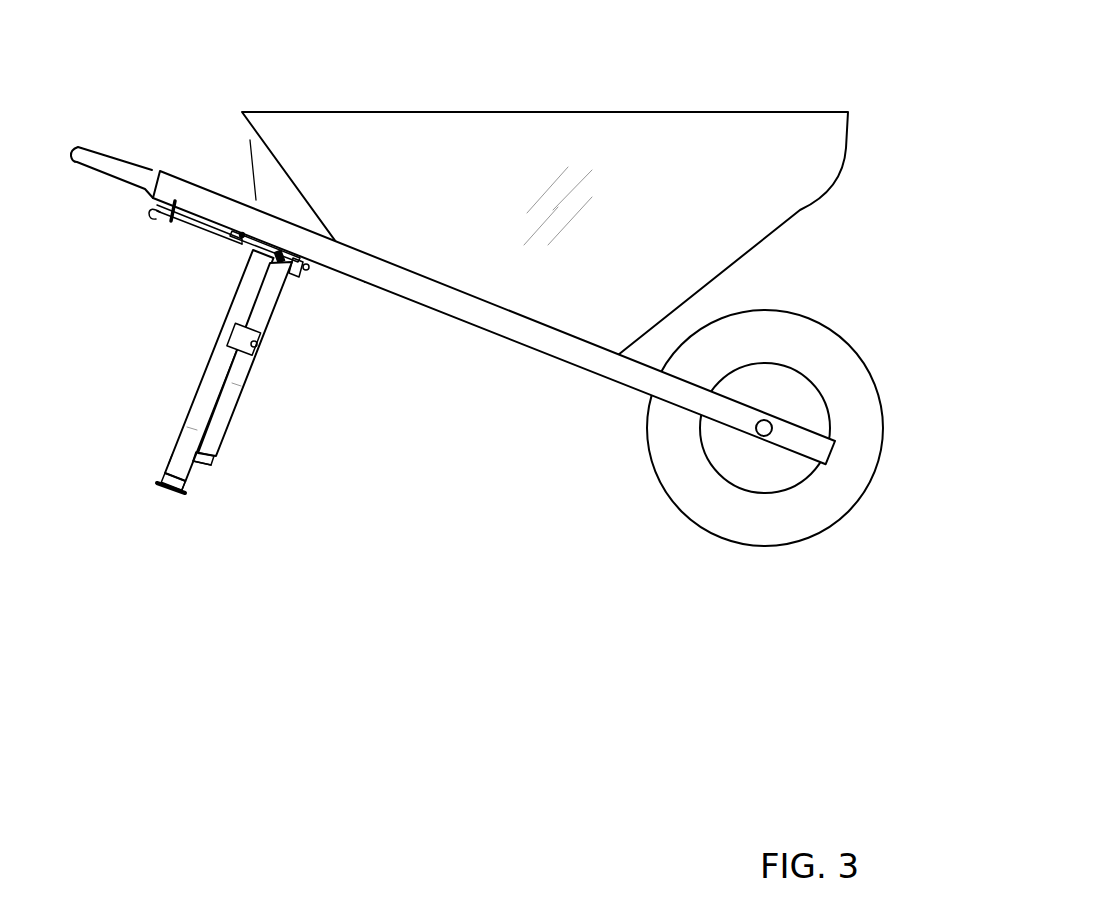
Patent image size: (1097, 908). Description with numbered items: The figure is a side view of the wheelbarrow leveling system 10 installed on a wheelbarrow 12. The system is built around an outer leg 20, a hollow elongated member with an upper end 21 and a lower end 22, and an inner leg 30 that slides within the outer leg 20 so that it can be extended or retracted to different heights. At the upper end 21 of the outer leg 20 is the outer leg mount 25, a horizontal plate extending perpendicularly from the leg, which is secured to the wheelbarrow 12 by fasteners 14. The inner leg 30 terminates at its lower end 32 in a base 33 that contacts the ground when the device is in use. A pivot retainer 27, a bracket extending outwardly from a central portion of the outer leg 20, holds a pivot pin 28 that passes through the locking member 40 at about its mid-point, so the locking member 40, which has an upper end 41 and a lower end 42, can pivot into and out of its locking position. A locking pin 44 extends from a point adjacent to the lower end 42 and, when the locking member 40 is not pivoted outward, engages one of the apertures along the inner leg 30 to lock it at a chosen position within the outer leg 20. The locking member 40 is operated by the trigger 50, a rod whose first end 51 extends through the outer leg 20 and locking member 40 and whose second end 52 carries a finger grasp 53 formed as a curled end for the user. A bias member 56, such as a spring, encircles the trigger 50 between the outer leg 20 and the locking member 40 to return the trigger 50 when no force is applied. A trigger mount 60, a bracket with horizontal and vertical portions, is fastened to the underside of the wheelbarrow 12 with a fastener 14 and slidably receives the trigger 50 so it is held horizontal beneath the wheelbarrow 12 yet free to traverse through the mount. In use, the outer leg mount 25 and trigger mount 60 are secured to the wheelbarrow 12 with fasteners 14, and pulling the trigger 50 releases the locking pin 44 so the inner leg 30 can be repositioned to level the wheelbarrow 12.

The wheelbarrow leveling system 10 is at (190, 370).
The wheelbarrow 12 is at (518, 152).
The fasteners 14 is at (247, 247).
The outer leg 20 is at (190, 410).
The upper end 21 is at (273, 243).
The lower end 22 is at (168, 463).
The outer leg mount 25 is at (258, 212).
The pivot retainer 27 is at (258, 345).
The pivot pin 28 is at (260, 350).
The inner leg 30 is at (167, 477).
The lower end 32 is at (183, 488).
The base 33 is at (156, 487).
The locking member 40 is at (236, 408).
The upper end 41 is at (297, 268).
The lower end 42 is at (203, 462).
The locking pin 44 is at (199, 448).
The trigger 50 is at (173, 232).
The first end 51 is at (298, 266).
The second end 52 is at (157, 217).
The finger grasp 53 is at (147, 210).
The bias member 56 is at (273, 272).
The trigger mount 60 is at (150, 172).